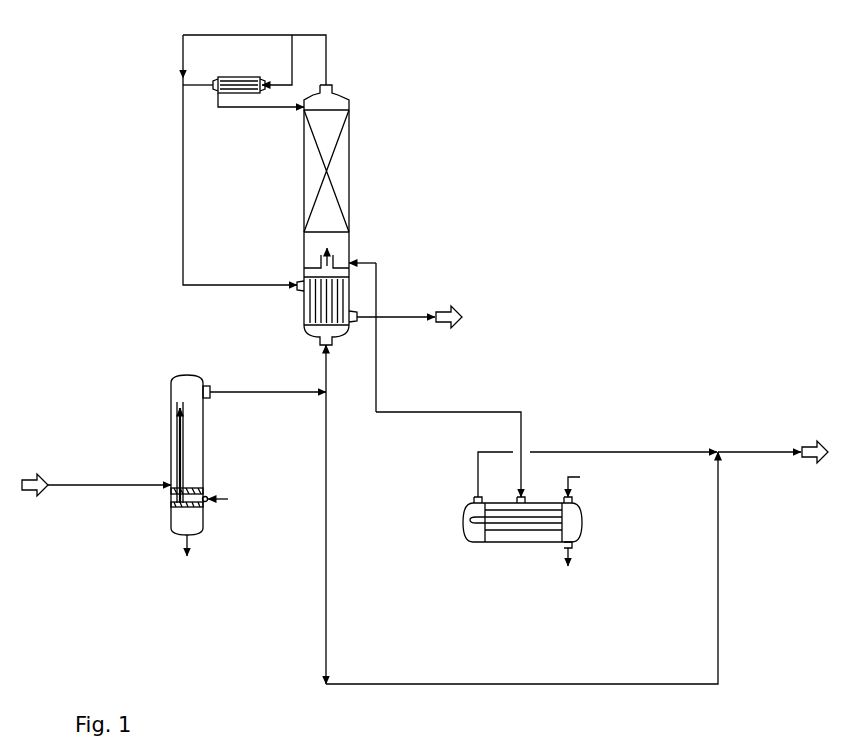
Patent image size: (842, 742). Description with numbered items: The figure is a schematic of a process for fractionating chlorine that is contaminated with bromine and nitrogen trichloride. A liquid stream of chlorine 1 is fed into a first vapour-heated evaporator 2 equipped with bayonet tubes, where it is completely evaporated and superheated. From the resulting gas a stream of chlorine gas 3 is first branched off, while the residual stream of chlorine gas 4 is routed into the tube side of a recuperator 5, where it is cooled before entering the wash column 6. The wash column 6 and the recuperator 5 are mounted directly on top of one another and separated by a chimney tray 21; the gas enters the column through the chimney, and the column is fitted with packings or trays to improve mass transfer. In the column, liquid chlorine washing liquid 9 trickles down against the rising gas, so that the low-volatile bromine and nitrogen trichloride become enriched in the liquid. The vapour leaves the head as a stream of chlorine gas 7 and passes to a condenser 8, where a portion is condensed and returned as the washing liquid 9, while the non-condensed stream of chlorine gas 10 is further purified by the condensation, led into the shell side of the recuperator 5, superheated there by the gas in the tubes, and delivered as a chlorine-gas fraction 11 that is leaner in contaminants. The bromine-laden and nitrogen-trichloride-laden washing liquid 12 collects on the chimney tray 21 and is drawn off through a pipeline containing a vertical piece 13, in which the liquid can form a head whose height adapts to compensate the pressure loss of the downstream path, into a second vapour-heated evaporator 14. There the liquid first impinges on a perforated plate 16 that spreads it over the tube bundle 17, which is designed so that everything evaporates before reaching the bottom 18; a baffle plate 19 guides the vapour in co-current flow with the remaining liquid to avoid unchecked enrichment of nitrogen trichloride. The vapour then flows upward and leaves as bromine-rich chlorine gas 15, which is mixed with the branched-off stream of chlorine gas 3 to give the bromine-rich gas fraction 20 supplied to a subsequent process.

The stream of chlorine 1 is at (112, 485).
The first vapour-heated evaporator 2 is at (175, 375).
The stream of chlorine gas 3 is at (327, 445).
The stream of chlorine gas 4 is at (320, 350).
The recuperator 5 is at (304, 303).
The wash column 6 is at (349, 170).
The stream of chlorine gas 7 is at (326, 62).
The condenser 8 is at (248, 77).
The washing liquid 9 is at (243, 107).
The stream of chlorine gas 10 is at (183, 176).
The chlorine-gas fraction 11 is at (412, 318).
The washing liquid 12 is at (364, 263).
The vertical piece 13 is at (376, 347).
The second vapour-heated evaporator 14 is at (536, 534).
The bromine-rich chlorine gas 15 is at (632, 452).
The perforated plate 16 is at (535, 510).
The tube bundle 17 is at (530, 545).
The bottom 18 is at (497, 545).
The baffle plate 19 is at (470, 520).
The bromine-rich gas fraction 20 is at (757, 452).
The chimney tray 21 is at (304, 262).